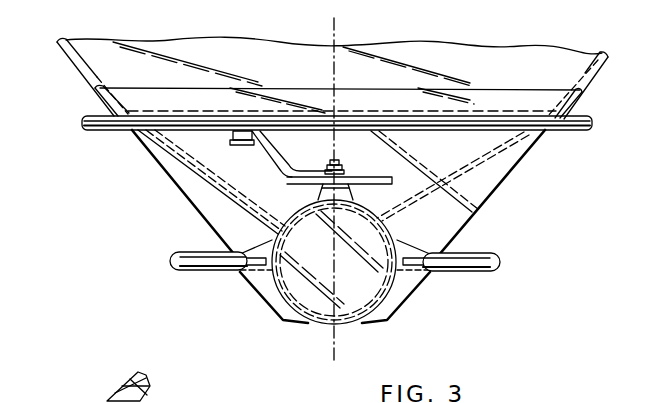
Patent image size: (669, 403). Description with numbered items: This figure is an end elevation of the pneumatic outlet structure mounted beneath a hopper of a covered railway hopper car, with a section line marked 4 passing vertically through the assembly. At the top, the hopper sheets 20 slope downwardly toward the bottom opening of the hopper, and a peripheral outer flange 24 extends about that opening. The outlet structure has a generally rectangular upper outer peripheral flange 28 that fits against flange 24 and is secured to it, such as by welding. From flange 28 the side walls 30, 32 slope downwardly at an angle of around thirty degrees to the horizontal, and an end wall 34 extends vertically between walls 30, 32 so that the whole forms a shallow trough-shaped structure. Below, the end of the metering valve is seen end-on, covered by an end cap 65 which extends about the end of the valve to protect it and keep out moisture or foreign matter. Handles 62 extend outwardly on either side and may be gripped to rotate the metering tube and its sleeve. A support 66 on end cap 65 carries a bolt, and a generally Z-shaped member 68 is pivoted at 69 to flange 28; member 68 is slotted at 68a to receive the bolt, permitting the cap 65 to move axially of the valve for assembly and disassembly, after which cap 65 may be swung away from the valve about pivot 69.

The section line 4- 4 is at (362, 24).
The hopper sheets 20 is at (72, 68).
The peripheral outer flange 24 is at (83, 117).
The upper outer peripheral flange 28 is at (92, 131).
The side wall 30 is at (225, 170).
The side wall 32 is at (453, 175).
The end wall 34 is at (204, 202).
The handles 62 is at (204, 271).
The end cap 65 is at (329, 268).
The support 66 is at (353, 187).
The Z-shaped member 68 is at (288, 163).
The slot 68a is at (358, 158).
The pivot 69 is at (233, 145).